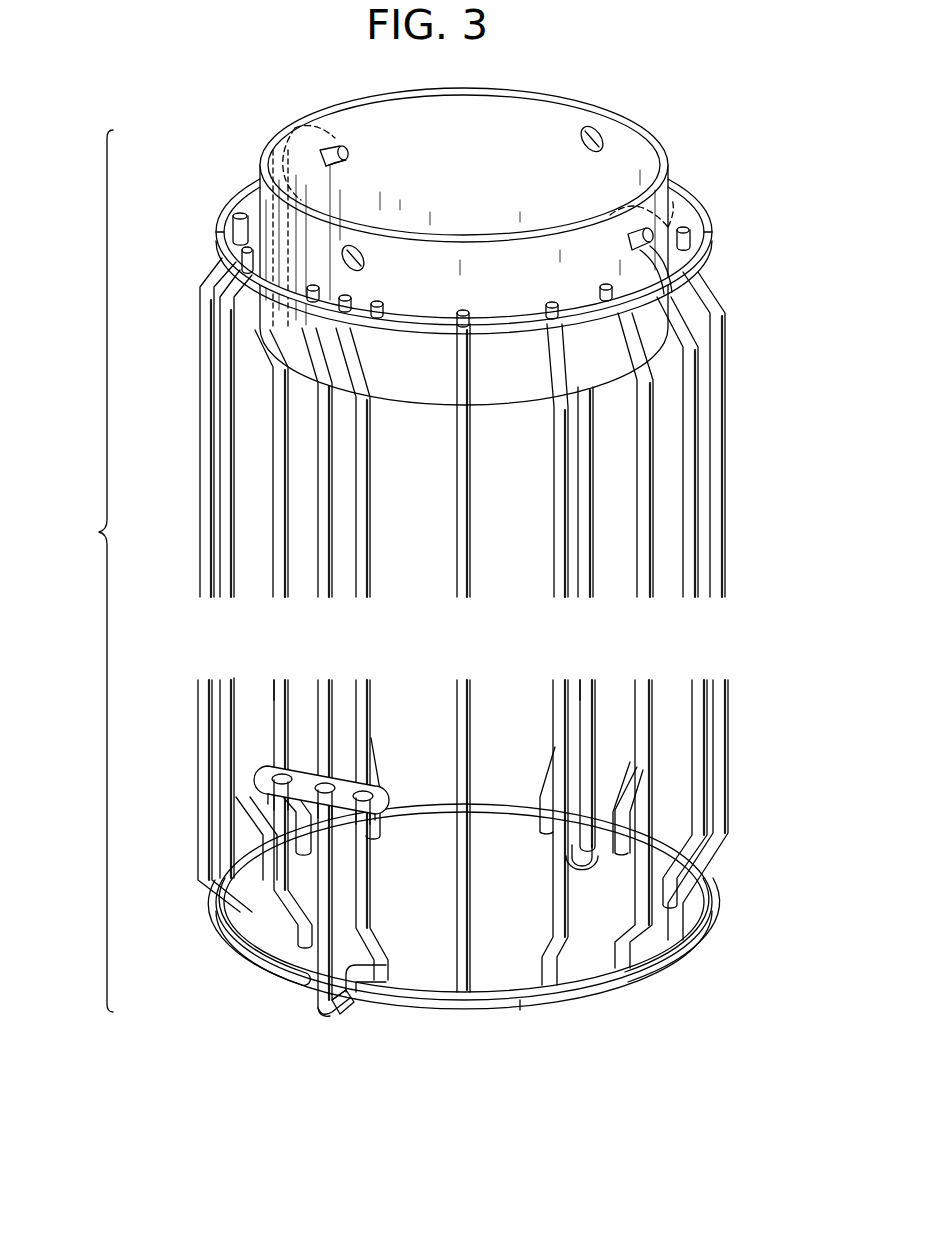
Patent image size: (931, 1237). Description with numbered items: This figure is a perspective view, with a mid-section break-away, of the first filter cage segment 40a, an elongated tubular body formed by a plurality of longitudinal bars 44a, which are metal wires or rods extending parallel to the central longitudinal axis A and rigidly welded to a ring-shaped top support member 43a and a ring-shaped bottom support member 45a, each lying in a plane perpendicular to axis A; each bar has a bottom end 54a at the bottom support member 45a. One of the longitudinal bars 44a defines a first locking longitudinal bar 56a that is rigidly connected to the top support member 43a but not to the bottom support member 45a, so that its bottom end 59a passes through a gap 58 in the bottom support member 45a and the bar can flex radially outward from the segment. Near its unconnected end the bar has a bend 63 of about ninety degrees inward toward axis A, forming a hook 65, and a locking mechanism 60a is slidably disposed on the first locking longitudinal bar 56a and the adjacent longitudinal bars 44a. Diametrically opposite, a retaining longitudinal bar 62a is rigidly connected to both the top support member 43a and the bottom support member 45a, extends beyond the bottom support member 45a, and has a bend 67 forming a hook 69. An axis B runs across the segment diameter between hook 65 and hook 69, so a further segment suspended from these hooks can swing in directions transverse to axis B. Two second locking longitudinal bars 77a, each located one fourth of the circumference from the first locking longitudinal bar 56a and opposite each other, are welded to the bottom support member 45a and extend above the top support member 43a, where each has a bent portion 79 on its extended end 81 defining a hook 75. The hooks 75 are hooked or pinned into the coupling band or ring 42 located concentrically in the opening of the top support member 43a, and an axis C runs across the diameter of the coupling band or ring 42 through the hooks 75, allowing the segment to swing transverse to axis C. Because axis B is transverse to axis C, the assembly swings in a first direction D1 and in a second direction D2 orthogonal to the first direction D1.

The first filter cage segment 40a is at (86, 536).
The coupling band or ring 42 is at (586, 104).
The top support member 43a is at (708, 228).
The longitudinal bars 44a is at (220, 592).
The bottom support member 45a is at (659, 974).
The bottom end 54a is at (534, 1036).
The first locking longitudinal bar 56a is at (282, 594).
The gap 58 is at (310, 988).
The bottom end 59a is at (338, 1026).
The locking mechanism 60a is at (380, 788).
The retaining longitudinal bar 62a is at (590, 594).
The bend 63 is at (322, 1010).
The hook 65 is at (378, 960).
The bend 67 is at (588, 858).
The hook 69 is at (584, 872).
The hook 75 is at (336, 154).
The second locking longitudinal bars 77a is at (235, 222).
The bent portion 79 is at (295, 134).
The extended end 81 is at (348, 162).
The central longitudinal axis A is at (464, 238).
The axis B is at (766, 754).
The axis C is at (800, 286).
The first direction D1 is at (538, 908).
The second direction D2 is at (468, 244).